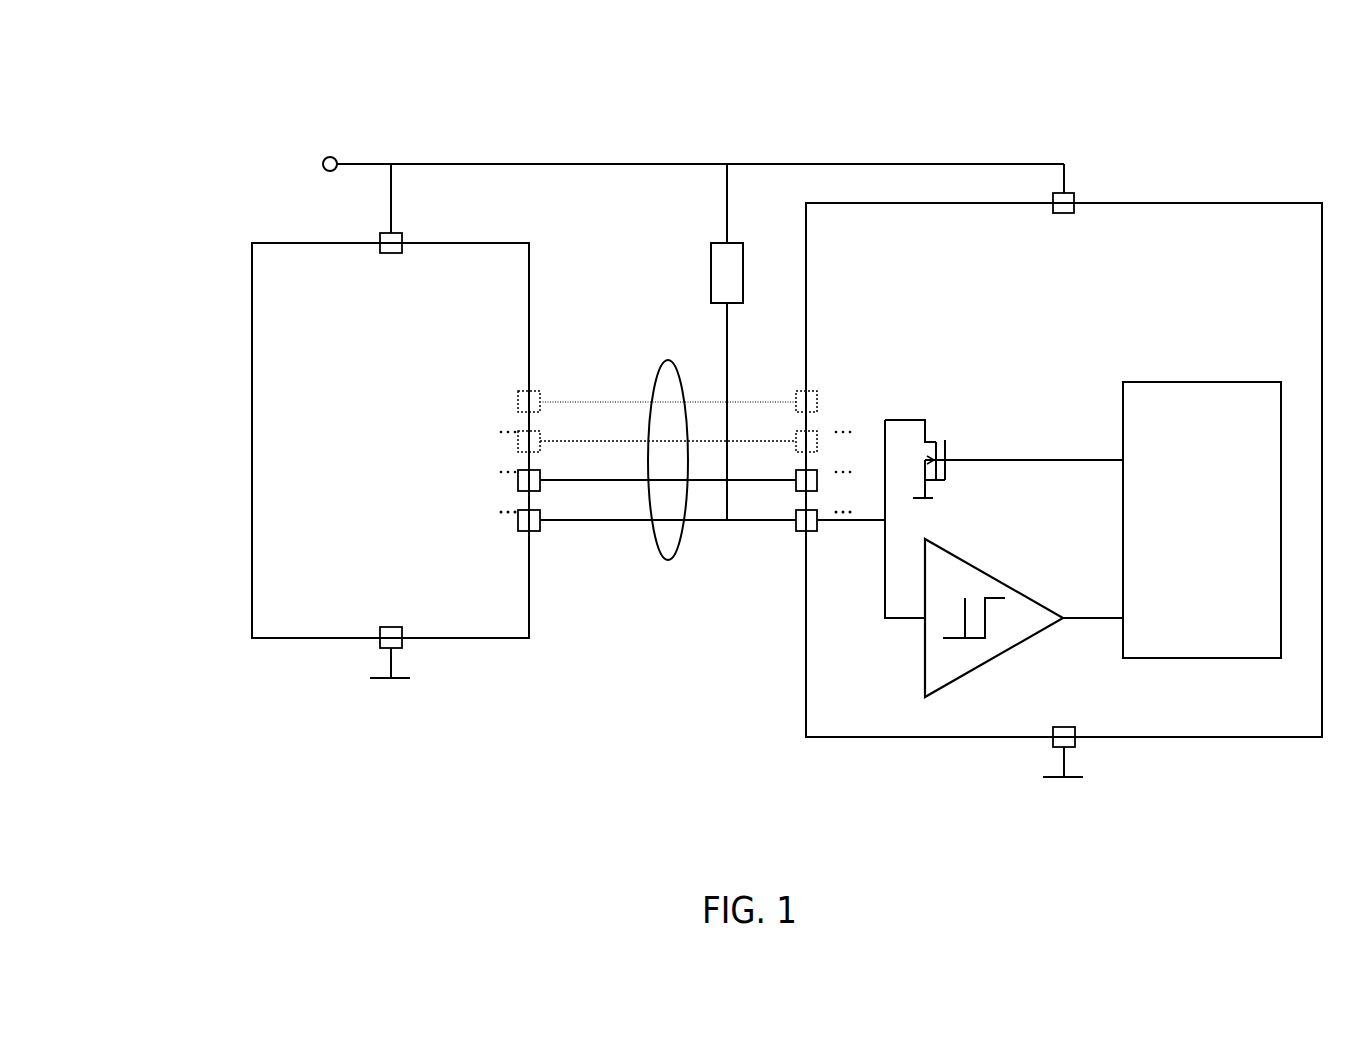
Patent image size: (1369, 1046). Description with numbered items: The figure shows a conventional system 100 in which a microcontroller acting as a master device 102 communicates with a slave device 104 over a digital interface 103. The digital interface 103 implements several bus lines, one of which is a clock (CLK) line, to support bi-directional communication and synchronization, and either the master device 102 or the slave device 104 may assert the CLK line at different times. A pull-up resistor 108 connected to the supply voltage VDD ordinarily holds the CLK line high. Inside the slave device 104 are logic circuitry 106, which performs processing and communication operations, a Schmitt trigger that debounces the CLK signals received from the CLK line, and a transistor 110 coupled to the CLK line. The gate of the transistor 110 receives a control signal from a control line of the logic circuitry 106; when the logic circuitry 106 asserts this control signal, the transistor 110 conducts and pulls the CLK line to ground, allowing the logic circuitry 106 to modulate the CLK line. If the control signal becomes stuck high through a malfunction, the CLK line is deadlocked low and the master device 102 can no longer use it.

The conventional system 100 is at (128, 29).
The master device 102 is at (396, 426).
The digital interface 103 is at (668, 495).
The slave device 104 is at (1059, 476).
The logic circuitry 106 is at (1202, 520).
The pull-up resistor 108 is at (701, 342).
The transistor 110 is at (938, 428).